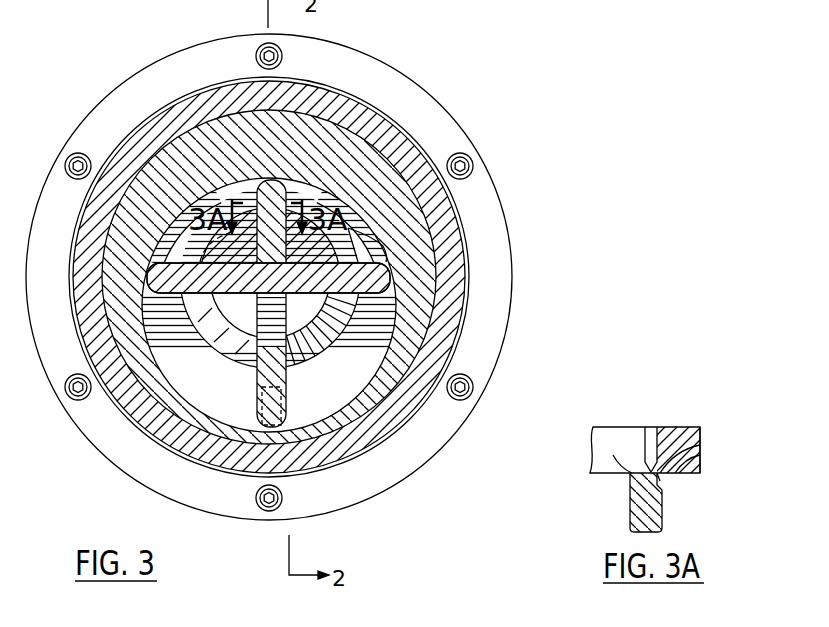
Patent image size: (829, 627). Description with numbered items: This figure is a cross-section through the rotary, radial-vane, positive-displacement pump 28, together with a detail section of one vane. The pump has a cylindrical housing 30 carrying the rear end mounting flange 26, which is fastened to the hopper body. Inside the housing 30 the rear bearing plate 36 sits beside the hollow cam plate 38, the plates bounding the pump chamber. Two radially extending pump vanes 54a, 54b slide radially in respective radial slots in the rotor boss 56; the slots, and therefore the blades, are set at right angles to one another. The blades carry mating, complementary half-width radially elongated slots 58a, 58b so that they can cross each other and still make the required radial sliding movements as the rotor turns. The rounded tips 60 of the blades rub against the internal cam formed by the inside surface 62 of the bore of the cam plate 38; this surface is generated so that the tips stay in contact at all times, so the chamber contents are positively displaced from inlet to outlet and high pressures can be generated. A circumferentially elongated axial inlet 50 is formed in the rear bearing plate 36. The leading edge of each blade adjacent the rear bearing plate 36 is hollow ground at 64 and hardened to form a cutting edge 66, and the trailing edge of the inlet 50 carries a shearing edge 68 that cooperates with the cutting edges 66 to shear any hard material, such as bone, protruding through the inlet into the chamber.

In FIG. 3, the rear end mounting flange 26 is at (425, 112).
In FIG. 3, the rotary radial-vane positive-displacement pump 28 is at (503, 157).
In FIG. 3, the cylindrical housing 30 is at (452, 243).
In FIG. 3, the rear bearing plate 36 is at (383, 313).
In FIG. 3A, the rear bearing plate 36 is at (681, 434).
In FIG. 3, the hollow cam plate 38 is at (417, 273).
In FIG. 3, the axial inlet 50 is at (297, 362).
In FIG. 3A, the axial inlet 50 is at (596, 430).
In FIG. 3, the pump vane 54a is at (288, 366).
In FIG. 3A, the pump vane 54a is at (650, 512).
In FIG. 3, the pump vane 54b is at (147, 280).
In FIG. 3, the rotor boss 56 is at (228, 317).
In FIG. 3, the half-width radially elongated slot 58a is at (234, 358).
In FIG. 3, the half-width radially elongated slot 58b is at (330, 250).
In FIG. 3, the blade tips 60 is at (326, 97).
In FIG. 3A, the blade tips 60 is at (612, 452).
In FIG. 3, the inside surface of cam plate bore 62 is at (363, 117).
In FIG. 3A, the inside surface of cam plate bore 62 is at (700, 456).
In FIG. 3A, the hollow ground portion 64 is at (660, 481).
In FIG. 3A, the cutting edges 66 is at (698, 443).
In FIG. 3A, the shearing edge 68 is at (644, 462).